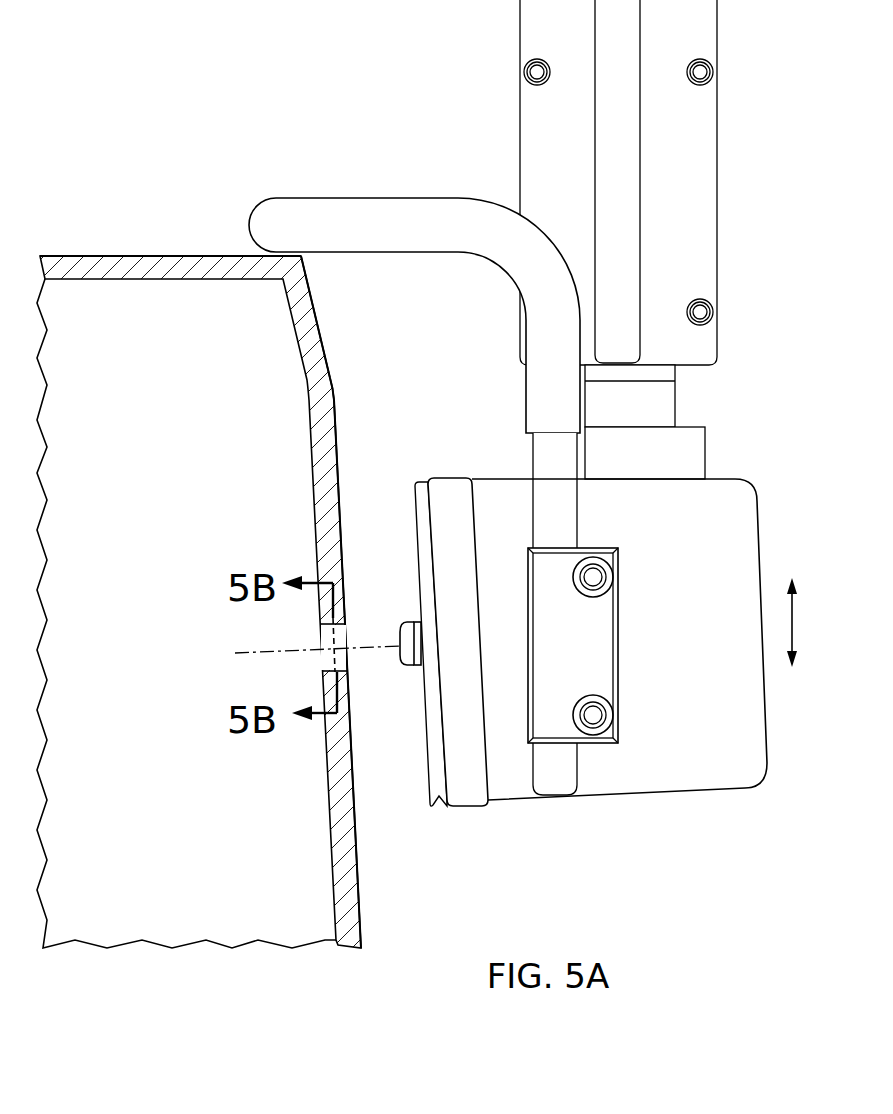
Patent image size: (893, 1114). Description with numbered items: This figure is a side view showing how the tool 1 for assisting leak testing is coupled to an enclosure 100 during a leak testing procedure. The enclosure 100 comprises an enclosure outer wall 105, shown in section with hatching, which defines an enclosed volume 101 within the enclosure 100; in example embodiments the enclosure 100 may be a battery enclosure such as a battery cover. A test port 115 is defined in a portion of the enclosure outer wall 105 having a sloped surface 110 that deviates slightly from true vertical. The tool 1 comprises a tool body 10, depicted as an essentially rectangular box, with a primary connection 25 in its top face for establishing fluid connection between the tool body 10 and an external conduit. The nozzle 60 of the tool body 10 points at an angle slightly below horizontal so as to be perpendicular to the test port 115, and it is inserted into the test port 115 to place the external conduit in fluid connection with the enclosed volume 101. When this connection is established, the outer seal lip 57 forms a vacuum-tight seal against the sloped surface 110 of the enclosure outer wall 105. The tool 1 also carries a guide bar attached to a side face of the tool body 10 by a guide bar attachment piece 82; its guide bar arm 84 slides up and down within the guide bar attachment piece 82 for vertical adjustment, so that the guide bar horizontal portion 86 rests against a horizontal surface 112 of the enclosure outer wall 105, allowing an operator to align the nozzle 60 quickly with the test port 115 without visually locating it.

The tool 1 is at (667, 182).
The tool body 10 is at (677, 789).
The primary connection 25 is at (637, 476).
The outer seal lip 57 is at (422, 484).
The nozzle 60 is at (403, 624).
The guide bar attachment piece 82 is at (588, 644).
The guide bar arm 84 is at (577, 511).
The guide bar horizontal portion 86 is at (333, 219).
The enclosure 100 is at (446, 530).
The enclosed volume 101 is at (165, 383).
The enclosure outer wall 105 is at (84, 258).
The sloped surface 110 is at (333, 400).
The horizontal surface 112 is at (216, 255).
The test port 115 is at (322, 637).